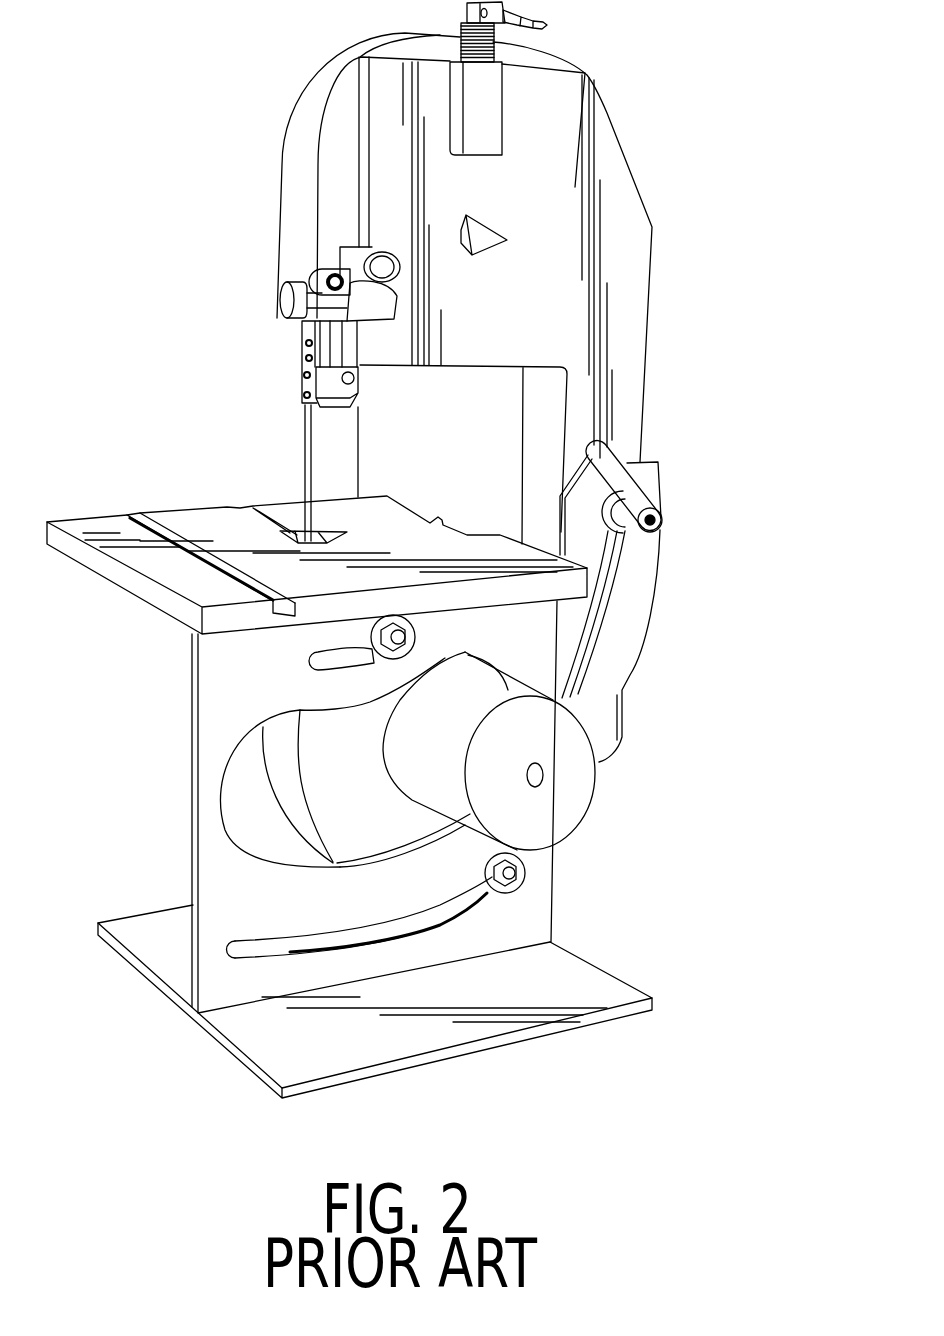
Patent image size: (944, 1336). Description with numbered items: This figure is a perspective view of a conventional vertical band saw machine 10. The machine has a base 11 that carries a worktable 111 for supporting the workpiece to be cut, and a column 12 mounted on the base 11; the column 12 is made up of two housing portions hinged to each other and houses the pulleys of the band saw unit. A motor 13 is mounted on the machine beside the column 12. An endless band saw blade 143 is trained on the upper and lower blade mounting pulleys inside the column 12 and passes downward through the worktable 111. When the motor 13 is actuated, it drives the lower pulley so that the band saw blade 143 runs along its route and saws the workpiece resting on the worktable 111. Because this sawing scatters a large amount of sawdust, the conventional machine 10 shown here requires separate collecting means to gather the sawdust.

The vertical band saw machine 10 is at (658, 182).
The base 11 is at (150, 977).
The column 12 is at (650, 268).
The motor 13 is at (585, 792).
The worktable 111 is at (183, 520).
The band saw blade 143 is at (307, 450).